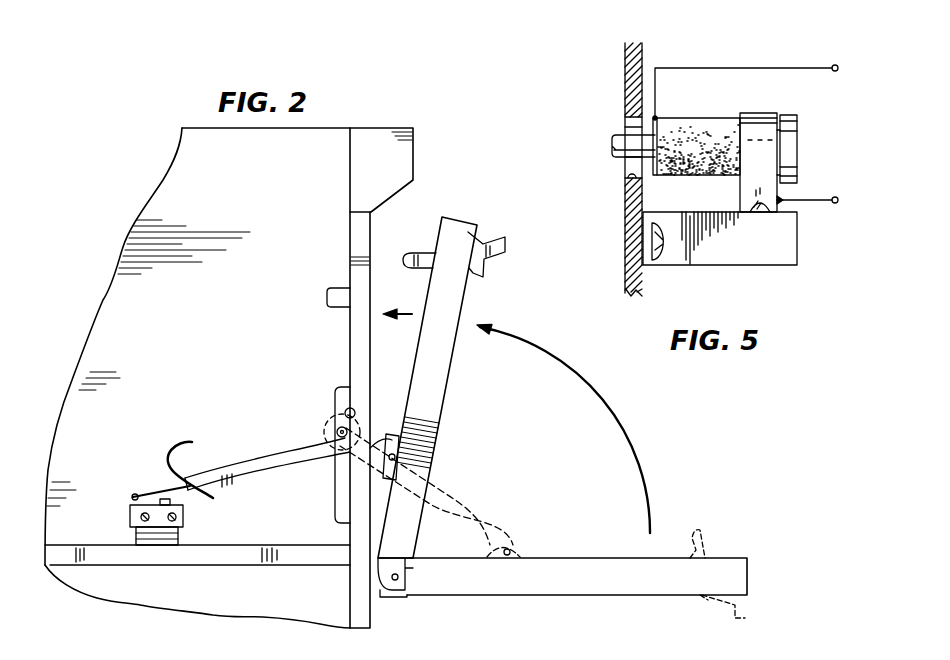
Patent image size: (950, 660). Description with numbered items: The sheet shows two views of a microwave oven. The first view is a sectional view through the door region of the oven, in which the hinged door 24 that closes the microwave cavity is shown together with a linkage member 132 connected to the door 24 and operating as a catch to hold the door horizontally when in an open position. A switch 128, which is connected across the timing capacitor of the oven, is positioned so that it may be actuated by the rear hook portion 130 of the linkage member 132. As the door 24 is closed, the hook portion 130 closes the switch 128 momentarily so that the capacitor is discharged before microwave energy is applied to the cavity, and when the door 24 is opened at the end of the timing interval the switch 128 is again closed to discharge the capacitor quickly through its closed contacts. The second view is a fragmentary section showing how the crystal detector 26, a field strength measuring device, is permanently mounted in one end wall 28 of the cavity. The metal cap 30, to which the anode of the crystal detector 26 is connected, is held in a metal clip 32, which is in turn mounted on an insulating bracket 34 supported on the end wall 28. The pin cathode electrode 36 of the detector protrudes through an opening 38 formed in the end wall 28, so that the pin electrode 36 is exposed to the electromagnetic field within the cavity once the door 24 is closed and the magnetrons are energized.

In FIG. 2, the hinged door 24 is at (440, 392).
In FIG. 2, the switch 128 is at (183, 509).
In FIG. 2, the rear hook portion 130 is at (200, 457).
In FIG. 2, the linkage member 132 is at (297, 470).
In FIG. 5, the crystal detector 26 is at (701, 114).
In FIG. 5, the end wall 28 is at (628, 258).
In FIG. 5, the metal cap 30 is at (781, 140).
In FIG. 5, the metal clip 32 is at (752, 125).
In FIG. 5, the insulating bracket 34 is at (724, 250).
In FIG. 5, the pin cathode electrode 36 is at (613, 146).
In FIG. 5, the opening 38 is at (630, 173).